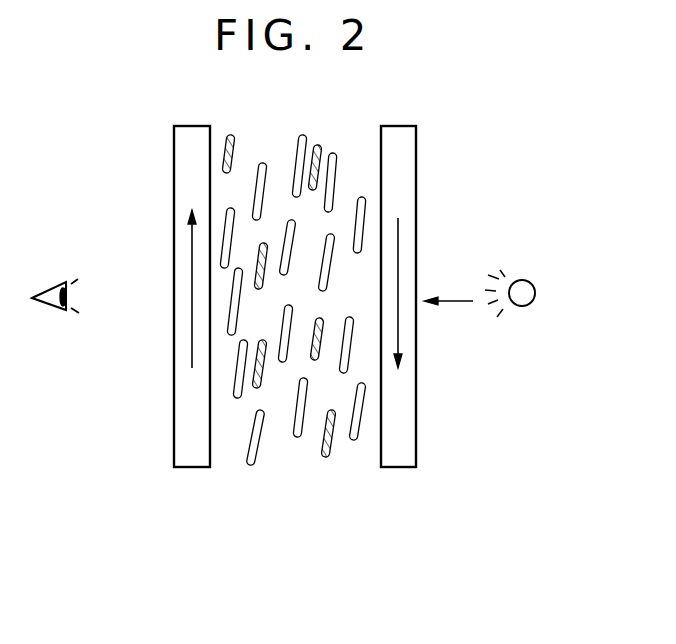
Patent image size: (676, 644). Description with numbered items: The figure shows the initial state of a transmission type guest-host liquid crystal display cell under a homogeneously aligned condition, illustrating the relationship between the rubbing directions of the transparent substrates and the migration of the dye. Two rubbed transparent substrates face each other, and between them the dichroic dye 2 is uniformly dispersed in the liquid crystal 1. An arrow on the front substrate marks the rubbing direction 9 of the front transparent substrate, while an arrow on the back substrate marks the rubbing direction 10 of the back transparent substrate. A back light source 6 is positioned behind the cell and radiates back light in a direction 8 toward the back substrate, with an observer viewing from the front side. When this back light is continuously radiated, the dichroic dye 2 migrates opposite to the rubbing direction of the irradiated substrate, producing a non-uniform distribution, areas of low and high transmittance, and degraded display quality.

The liquid crystal 1 is at (255, 457).
The dichroic dye 2 is at (330, 452).
The back light source 6 is at (536, 294).
The direction of back light 8 is at (455, 302).
The rubbing direction of the front transparent substrate 9 is at (192, 247).
The rubbing direction of the back transparent substrate 10 is at (398, 236).